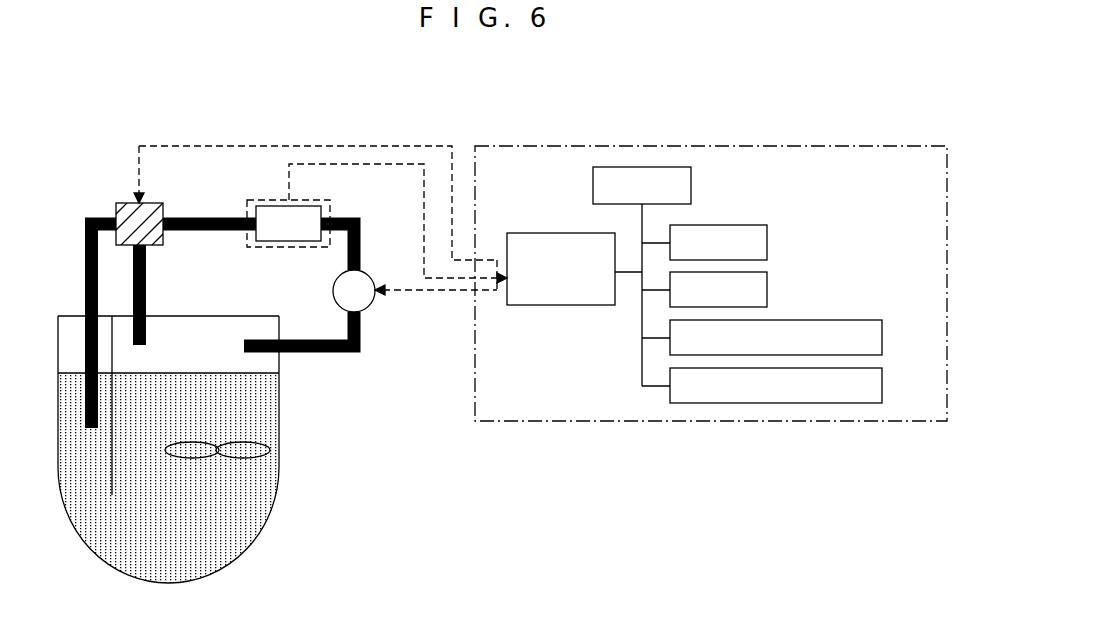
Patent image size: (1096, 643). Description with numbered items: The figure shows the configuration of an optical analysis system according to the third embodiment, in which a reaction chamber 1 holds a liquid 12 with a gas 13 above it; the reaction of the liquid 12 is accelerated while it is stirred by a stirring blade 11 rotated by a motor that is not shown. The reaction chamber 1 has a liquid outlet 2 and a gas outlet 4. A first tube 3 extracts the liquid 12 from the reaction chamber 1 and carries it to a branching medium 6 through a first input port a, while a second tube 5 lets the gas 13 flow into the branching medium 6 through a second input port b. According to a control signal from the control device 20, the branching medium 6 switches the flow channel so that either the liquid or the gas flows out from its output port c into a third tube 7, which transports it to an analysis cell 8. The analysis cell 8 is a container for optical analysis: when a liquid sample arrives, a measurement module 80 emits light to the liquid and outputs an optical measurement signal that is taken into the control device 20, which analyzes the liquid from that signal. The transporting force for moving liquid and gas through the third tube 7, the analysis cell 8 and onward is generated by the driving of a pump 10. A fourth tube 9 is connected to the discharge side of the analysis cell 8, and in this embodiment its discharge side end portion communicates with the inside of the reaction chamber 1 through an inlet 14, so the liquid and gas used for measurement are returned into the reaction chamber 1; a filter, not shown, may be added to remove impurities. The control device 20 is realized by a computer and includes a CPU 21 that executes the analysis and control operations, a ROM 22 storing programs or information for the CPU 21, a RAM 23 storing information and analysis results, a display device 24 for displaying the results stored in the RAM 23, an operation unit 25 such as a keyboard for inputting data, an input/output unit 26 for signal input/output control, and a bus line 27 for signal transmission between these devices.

The reaction chamber 1 is at (257, 535).
The liquid outlet 2 is at (83, 315).
The first tube 3 is at (83, 240).
The gas outlet 4 is at (148, 316).
The second tube 5 is at (148, 268).
The branching medium 6 is at (163, 202).
The third tube 7 is at (197, 213).
The analysis cell 8 is at (287, 235).
The measurement module 80 is at (280, 200).
The fourth tube 9 is at (348, 215).
The pump 10 is at (367, 277).
The stirring blade 11 is at (197, 447).
The liquid 12 is at (82, 508).
The gas 13 is at (207, 322).
The inlet 14 is at (280, 353).
The control device 20 is at (538, 147).
The CPU 21 is at (691, 182).
The ROM 22 is at (767, 240).
The RAM 23 is at (767, 287).
The display device 24 is at (882, 335).
The operation unit 25 is at (882, 382).
The input/output unit 26 is at (523, 232).
The bus line 27 is at (640, 320).